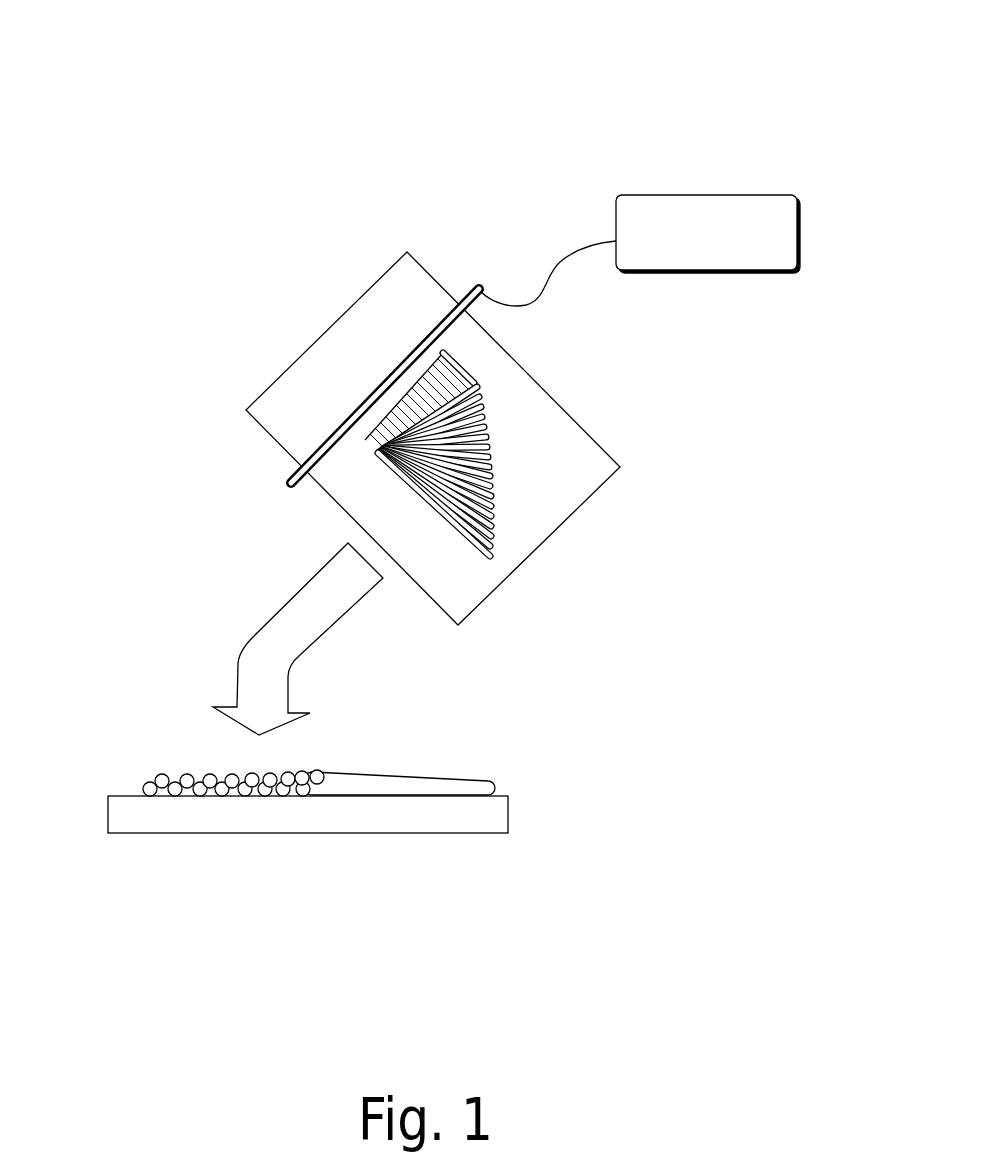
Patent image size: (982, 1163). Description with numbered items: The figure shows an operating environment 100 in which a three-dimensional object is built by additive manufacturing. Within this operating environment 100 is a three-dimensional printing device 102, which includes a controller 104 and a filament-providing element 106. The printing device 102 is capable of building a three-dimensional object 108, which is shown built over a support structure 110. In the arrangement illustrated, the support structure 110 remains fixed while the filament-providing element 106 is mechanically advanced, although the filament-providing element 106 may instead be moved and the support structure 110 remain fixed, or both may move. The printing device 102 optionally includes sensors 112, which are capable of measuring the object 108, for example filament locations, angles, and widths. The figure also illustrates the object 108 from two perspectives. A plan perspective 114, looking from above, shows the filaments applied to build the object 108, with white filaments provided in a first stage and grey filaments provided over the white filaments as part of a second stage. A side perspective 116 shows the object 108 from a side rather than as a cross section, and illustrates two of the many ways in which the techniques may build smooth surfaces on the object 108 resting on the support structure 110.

The operating environment 100 is at (754, 70).
The 3D printing device 102 is at (247, 451).
The controller 104 is at (640, 250).
The filament-providing element 106 is at (286, 490).
The 3D object 108 is at (425, 761).
The support structure 110 is at (593, 453).
The sensors 112 is at (521, 332).
The plan perspective 114 is at (521, 416).
The side perspective 116 is at (345, 742).